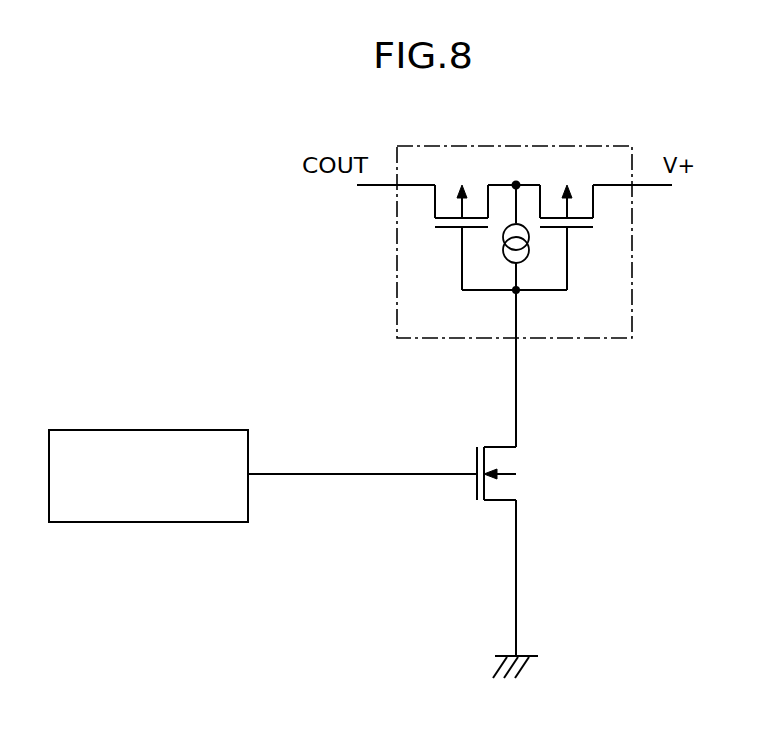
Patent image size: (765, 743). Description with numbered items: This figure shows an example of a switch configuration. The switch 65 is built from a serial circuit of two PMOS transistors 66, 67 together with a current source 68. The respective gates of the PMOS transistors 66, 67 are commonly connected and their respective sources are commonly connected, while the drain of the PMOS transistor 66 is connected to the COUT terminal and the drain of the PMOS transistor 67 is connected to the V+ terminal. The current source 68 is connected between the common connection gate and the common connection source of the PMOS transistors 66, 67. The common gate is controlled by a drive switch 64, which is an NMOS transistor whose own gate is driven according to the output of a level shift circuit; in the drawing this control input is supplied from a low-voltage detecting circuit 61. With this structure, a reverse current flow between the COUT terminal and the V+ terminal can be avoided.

The low-voltage detecting circuit 61 is at (175, 430).
The drive switch 64 is at (472, 485).
The switch 65 is at (632, 239).
The PMOS transistor 66 is at (450, 228).
The PMOS transistor 67 is at (578, 228).
The current source 68 is at (528, 248).